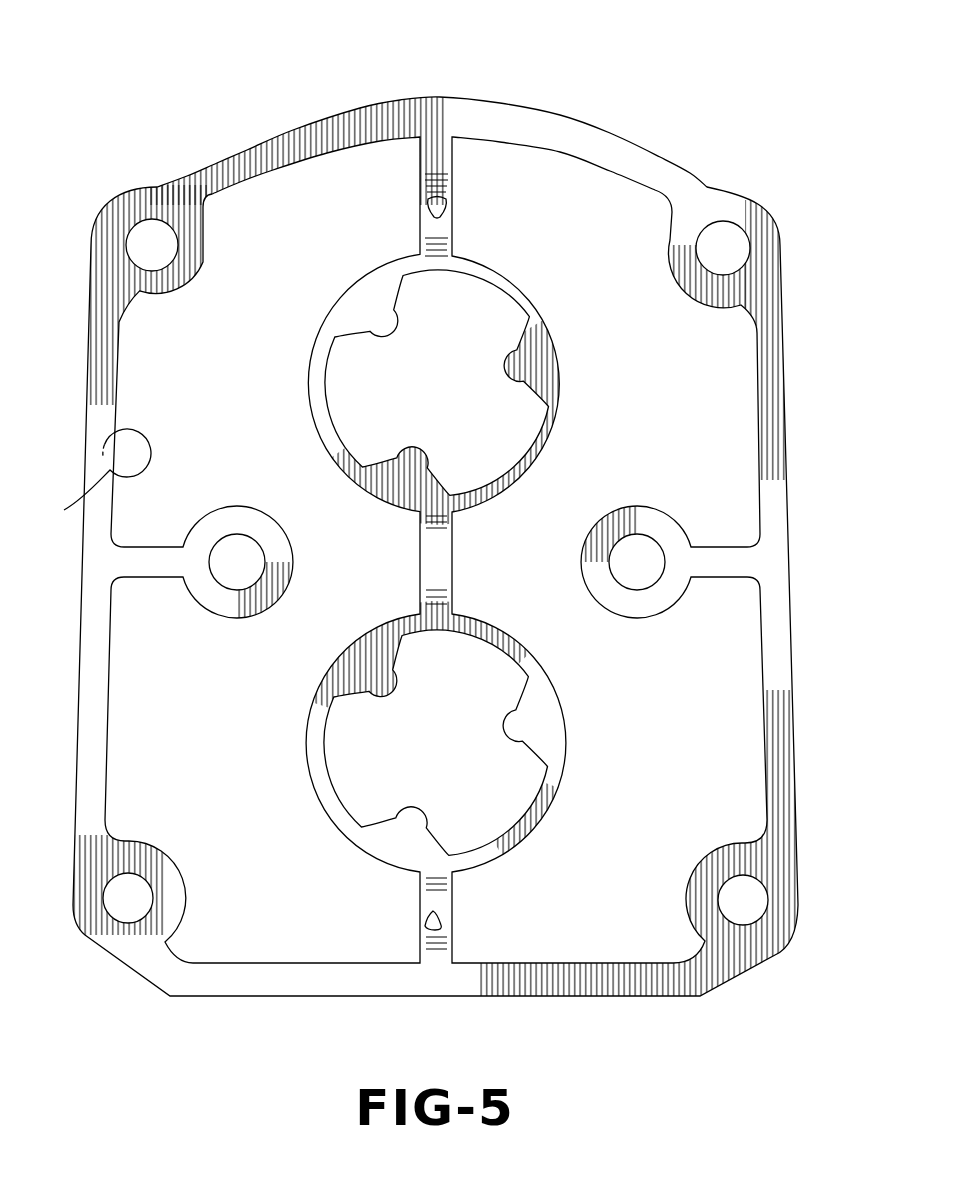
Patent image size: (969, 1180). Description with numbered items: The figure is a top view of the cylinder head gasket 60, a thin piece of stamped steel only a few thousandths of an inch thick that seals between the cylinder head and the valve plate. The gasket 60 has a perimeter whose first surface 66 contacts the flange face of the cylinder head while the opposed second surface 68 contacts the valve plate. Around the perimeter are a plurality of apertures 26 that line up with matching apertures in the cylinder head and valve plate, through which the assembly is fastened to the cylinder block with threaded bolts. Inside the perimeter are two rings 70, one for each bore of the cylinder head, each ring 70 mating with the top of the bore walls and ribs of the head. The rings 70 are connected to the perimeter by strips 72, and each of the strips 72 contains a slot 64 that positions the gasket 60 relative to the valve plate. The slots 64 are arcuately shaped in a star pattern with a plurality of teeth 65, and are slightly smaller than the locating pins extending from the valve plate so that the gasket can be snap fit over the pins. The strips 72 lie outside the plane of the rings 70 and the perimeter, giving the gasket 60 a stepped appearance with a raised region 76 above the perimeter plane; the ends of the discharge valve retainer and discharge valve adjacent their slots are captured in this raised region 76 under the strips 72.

The cylinder head gasket 60 is at (248, 137).
The apertures 26 is at (142, 262).
The slot 64 is at (433, 203).
The teeth 65 is at (440, 918).
The first surface 66 is at (775, 458).
The second surface 68 is at (91, 477).
The ring 70 is at (362, 298).
The strips 72 is at (435, 158).
The raised region 76 is at (445, 224).